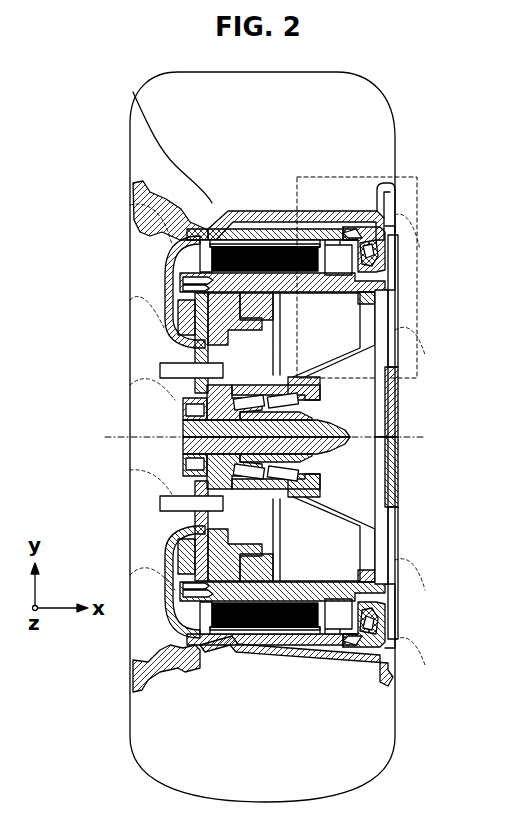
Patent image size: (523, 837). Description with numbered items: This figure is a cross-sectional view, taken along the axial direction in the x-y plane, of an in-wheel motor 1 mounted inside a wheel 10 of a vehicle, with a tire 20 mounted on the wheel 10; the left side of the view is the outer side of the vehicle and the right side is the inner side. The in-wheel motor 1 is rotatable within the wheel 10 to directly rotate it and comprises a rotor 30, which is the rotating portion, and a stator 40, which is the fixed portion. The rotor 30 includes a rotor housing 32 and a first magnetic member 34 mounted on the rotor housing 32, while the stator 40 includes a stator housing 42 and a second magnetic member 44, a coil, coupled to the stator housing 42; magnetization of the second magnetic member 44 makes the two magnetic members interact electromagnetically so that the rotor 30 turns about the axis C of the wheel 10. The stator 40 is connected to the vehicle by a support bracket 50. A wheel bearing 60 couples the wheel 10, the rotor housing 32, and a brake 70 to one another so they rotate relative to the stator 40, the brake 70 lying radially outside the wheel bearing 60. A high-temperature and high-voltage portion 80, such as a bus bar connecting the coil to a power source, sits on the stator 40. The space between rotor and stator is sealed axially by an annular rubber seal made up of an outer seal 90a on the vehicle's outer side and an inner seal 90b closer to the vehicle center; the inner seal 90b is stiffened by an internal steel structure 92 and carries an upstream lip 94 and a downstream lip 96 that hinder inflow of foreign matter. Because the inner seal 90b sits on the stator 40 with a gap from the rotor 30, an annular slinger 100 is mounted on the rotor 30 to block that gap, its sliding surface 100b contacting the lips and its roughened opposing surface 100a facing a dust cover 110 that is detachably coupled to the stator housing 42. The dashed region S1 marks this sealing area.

The in-wheel motor 1 is at (212, 200).
The wheel 10 is at (140, 665).
The tire 20 is at (175, 733).
The rotor 30 is at (179, 238).
The rotor housing 32 is at (175, 232).
The first magnetic member 34 is at (195, 238).
The stator 40 is at (211, 279).
The stator housing 42 is at (190, 288).
The second magnetic member 44 is at (188, 279).
The support bracket 50 is at (385, 333).
The wheel bearing 60 is at (180, 423).
The brake 70 is at (175, 350).
The high-temperature and high-voltage portion 80 is at (300, 228).
The outer seal 90a is at (170, 300).
The inner seal 90b is at (372, 296).
The structure 92 is at (350, 252).
The upstream lip 94 is at (368, 262).
The downstream lip 96 is at (377, 250).
The slinger 100 is at (383, 215).
The opposing surface 100a is at (374, 228).
The sliding surface 100b is at (356, 238).
The dust cover 110 is at (388, 220).
The sealing space S1 is at (356, 265).
The axis C is at (253, 439).